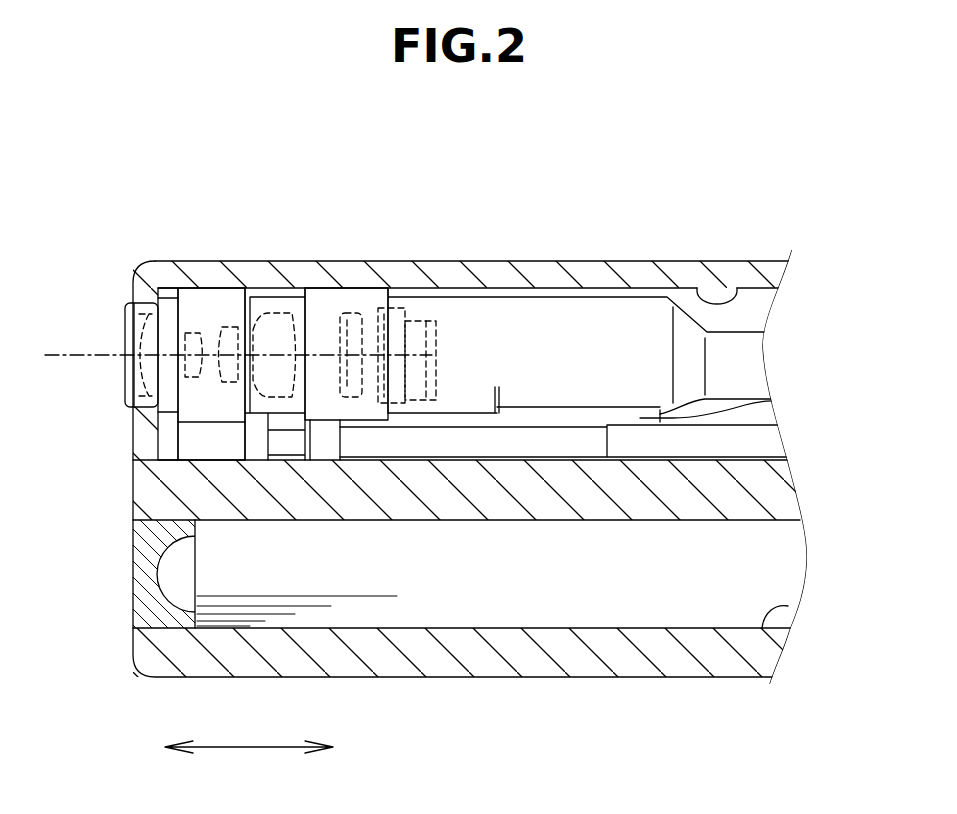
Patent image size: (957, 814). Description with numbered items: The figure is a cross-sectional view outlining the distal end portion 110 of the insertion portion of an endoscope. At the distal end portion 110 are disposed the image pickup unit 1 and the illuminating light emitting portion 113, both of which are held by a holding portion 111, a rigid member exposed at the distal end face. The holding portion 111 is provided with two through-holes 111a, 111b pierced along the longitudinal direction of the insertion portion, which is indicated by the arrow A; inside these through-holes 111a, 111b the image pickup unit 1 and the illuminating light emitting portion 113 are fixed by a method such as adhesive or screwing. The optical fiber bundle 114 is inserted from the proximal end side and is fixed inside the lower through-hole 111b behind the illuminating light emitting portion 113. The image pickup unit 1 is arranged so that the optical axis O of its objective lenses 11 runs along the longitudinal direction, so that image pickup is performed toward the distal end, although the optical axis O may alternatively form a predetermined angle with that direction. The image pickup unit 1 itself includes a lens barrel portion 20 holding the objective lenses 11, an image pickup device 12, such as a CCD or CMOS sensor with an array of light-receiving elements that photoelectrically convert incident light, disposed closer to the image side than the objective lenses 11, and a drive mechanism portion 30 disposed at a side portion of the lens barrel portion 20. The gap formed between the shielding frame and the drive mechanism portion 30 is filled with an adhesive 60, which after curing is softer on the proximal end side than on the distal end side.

The image pickup unit 1 is at (98, 387).
The objective lenses 11 is at (343, 313).
The image pickup device 12 is at (430, 320).
The lens barrel portion 20 is at (334, 297).
The drive mechanism portion 30 is at (465, 445).
The adhesive 60 is at (788, 403).
The distal end portion 110 is at (128, 196).
The holding portion 111 is at (625, 260).
The through-hole 111a is at (736, 288).
The through-hole 111b is at (788, 606).
The illuminating light emitting portion 113 is at (133, 612).
The optical fiber bundle 114 is at (790, 558).
The optical axis O is at (77, 354).
The arrow indicating longitudinal direction A is at (249, 759).